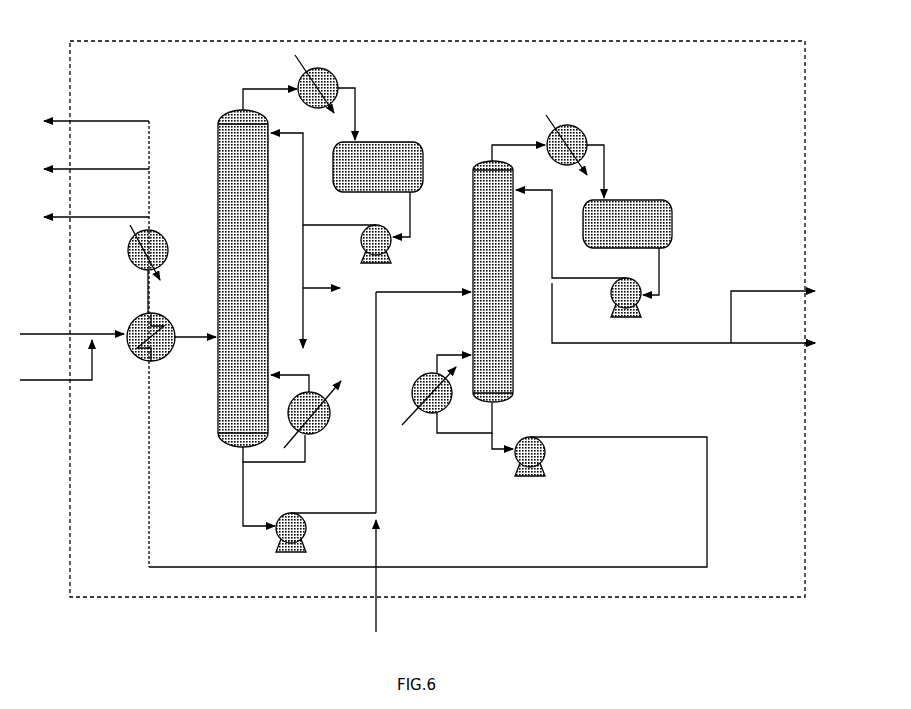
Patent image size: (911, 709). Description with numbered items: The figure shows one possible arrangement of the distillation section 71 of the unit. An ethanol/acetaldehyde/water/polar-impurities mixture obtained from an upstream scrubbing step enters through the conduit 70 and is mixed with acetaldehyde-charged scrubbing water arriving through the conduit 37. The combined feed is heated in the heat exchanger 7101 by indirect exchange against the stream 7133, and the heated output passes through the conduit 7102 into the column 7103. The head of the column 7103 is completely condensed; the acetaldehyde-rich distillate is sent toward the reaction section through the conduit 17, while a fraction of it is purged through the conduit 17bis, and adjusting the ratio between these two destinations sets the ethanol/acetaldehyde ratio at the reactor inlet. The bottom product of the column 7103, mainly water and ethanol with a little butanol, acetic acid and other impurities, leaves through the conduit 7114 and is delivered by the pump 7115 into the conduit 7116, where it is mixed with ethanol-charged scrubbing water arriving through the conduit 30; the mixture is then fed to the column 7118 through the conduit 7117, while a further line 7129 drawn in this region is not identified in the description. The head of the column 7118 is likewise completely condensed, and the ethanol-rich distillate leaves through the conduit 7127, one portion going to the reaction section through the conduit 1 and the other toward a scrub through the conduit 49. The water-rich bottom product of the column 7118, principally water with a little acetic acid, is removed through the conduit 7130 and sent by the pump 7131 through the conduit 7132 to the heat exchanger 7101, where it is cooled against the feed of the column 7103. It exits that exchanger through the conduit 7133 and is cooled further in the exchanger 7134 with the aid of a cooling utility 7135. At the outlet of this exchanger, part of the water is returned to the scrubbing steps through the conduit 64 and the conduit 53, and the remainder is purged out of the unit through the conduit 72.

The distillation section 71 is at (437, 319).
The conduit 72 is at (93, 106).
The conduit 64 is at (93, 156).
The conduit 53 is at (93, 205).
The cooling utility 7135 is at (129, 252).
The exchanger 7134 is at (122, 253).
The conduit 7133 is at (124, 291).
The conduit 70 is at (72, 322).
The conduit 37 is at (56, 360).
The heat exchanger 7101 is at (163, 346).
The conduit 7102 is at (198, 325).
The column 7103 is at (243, 278).
The conduit 17bis is at (333, 299).
The conduit 17 is at (319, 290).
The conduit 7114 is at (262, 494).
The pump 7115 is at (312, 536).
The conduit 7116 is at (333, 500).
The conduit 30 is at (390, 579).
The combined feed stream 7129 is at (417, 411).
The conduit 7117 is at (423, 301).
The column 7118 is at (490, 281).
The conduit 7127 is at (683, 324).
The conduit 49 is at (797, 332).
The conduit 1 is at (773, 308).
The conduit 7130 is at (448, 415).
The pump 7131 is at (519, 465).
The conduit 7132 is at (428, 487).